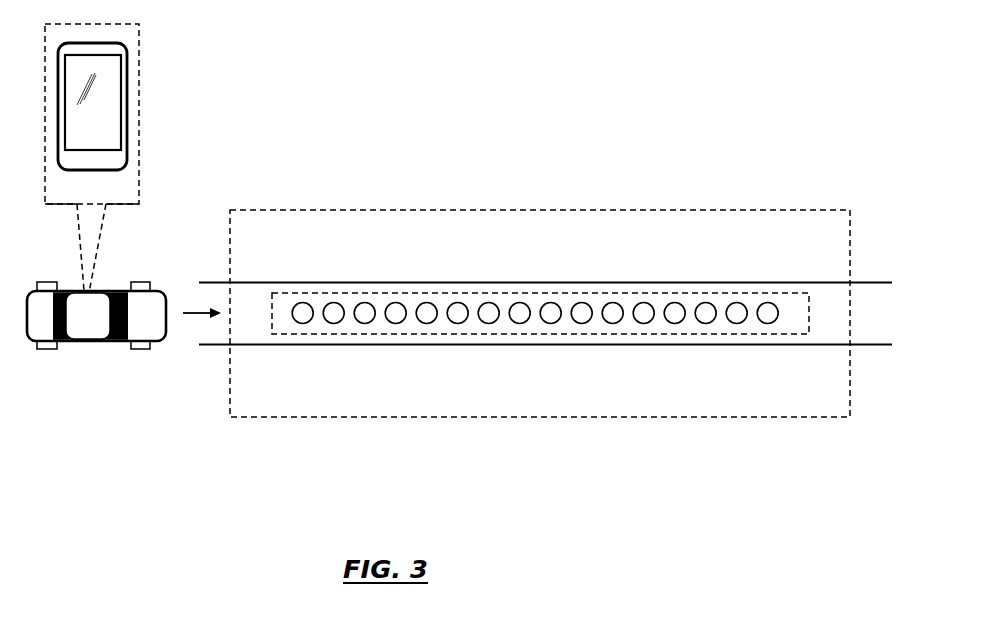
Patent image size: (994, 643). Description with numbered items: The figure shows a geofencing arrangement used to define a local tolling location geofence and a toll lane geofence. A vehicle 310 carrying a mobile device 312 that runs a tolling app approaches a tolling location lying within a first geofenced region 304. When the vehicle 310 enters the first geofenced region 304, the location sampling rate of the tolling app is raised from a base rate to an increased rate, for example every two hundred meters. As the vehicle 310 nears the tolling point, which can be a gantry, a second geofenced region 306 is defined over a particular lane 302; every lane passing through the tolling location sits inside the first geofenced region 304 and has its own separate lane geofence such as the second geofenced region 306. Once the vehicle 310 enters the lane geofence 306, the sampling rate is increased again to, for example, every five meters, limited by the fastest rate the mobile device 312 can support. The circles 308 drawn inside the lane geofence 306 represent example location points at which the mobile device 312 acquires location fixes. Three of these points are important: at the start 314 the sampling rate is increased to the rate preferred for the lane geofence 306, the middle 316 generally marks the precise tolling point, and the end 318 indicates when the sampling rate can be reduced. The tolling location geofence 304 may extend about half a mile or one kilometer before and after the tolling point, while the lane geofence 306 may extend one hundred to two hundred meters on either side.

The lane 302 is at (894, 313).
The first geofenced region 304 is at (743, 417).
The second geofenced region 306 is at (606, 334).
The circles 308 is at (366, 302).
The vehicle 310 is at (97, 341).
The mobile device 312 is at (127, 94).
The start 314 is at (303, 302).
The middle 316 is at (550, 302).
The end 318 is at (769, 302).